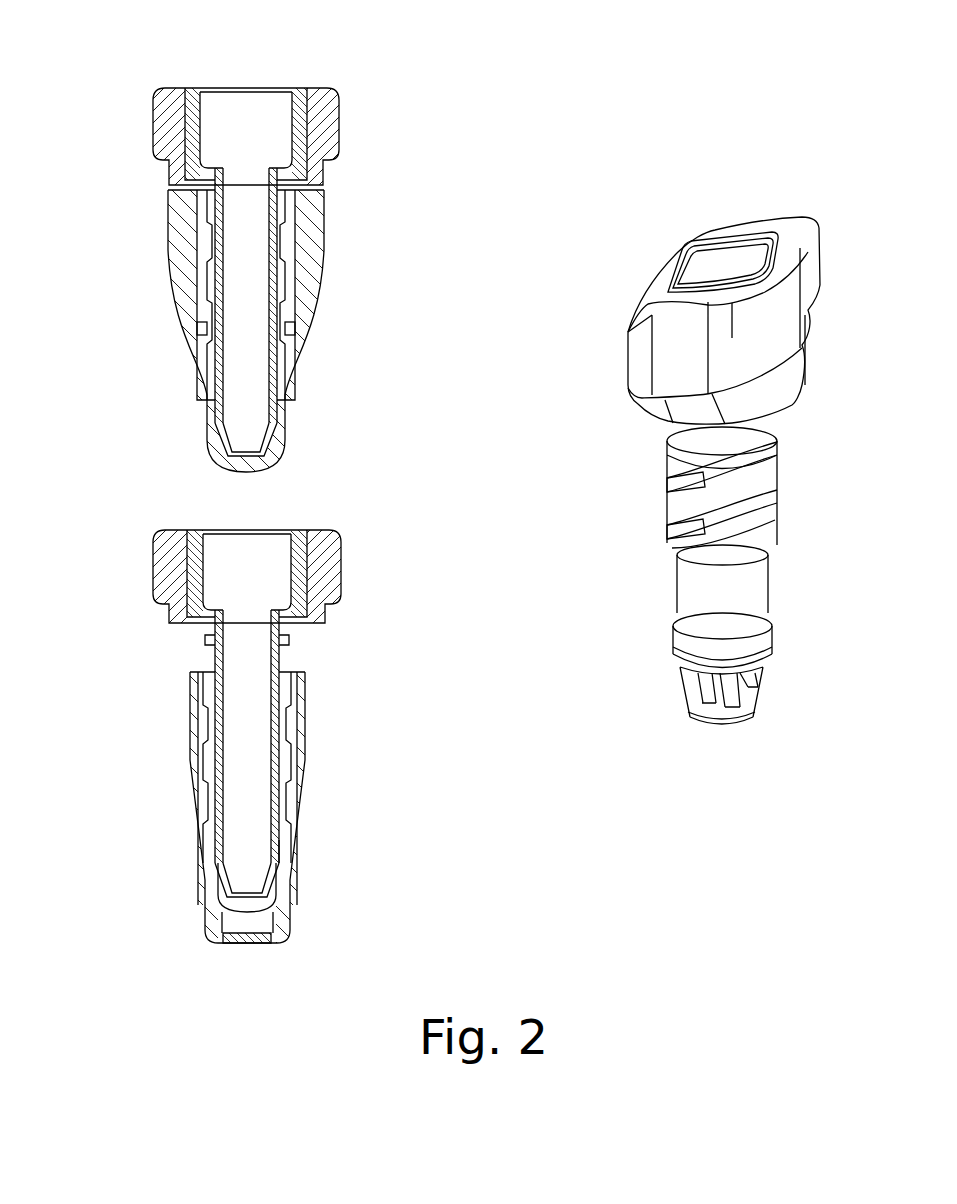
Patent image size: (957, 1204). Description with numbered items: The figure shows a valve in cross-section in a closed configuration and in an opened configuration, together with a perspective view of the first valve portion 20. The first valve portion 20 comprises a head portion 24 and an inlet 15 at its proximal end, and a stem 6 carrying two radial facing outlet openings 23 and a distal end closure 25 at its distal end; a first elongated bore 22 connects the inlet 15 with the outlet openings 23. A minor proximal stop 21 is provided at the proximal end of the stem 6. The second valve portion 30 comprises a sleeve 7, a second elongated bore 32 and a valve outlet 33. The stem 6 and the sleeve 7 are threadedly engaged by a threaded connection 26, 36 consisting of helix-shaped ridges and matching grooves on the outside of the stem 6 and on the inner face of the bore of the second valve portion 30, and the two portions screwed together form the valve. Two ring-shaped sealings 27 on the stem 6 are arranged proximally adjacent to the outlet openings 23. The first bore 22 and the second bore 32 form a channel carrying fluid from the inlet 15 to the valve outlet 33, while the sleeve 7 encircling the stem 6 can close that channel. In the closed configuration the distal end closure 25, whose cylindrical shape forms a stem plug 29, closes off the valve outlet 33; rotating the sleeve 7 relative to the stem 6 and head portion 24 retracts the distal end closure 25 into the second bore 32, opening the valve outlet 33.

The stem 6 is at (688, 567).
The sleeve 7 is at (185, 343).
The inlet 15 is at (233, 87).
The first valve portion 20 is at (196, 96).
The minor proximal stop 21 is at (293, 208).
The first elongated bore 22 is at (267, 101).
The outlet openings 23 is at (262, 430).
The head portion 24 is at (160, 123).
The distal end closure 25 is at (238, 472).
The threaded connection 26 is at (293, 300).
The ring-shaped sealings 27 is at (277, 850).
The stem plug 29 is at (218, 887).
The second valve portion 30 is at (170, 280).
The second elongated bore 32 is at (222, 919).
The valve outlet 33 is at (244, 945).
The threaded connection 36 is at (295, 247).